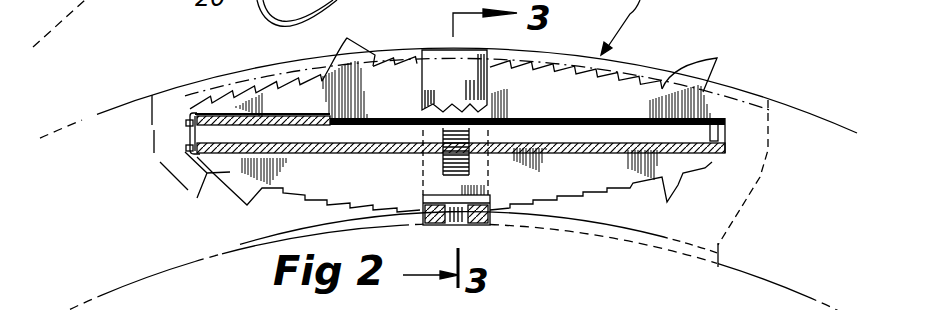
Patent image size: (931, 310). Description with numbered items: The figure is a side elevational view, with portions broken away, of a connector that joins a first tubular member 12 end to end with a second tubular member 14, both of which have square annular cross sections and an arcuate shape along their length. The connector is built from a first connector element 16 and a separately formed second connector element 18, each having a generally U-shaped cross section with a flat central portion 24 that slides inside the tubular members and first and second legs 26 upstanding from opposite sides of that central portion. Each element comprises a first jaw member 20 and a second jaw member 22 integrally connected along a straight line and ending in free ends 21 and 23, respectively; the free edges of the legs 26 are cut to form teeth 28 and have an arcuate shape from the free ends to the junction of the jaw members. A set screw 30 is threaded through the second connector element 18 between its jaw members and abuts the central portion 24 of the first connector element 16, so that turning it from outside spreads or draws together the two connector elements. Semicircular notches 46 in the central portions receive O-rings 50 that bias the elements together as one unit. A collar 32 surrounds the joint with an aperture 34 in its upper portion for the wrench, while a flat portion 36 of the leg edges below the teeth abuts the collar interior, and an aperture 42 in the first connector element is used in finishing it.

The first tubular member 12 is at (90, 118).
The second tubular member 14 is at (815, 123).
The first connector element 16 is at (649, 68).
The second connector element 18 is at (615, 205).
The first jaw member 20 is at (192, 112).
The free end 21 is at (187, 121).
The second jaw member 22 is at (504, 183).
The free end 23 is at (725, 114).
The flat central portion 24 is at (607, 130).
The legs 26 is at (267, 92).
The teeth 28 is at (348, 45).
The set screw 30 is at (437, 168).
The collar 32 is at (435, 40).
The aperture 34 is at (452, 226).
The portion 36 is at (477, 220).
The aperture 42 is at (307, 118).
The semicircular notches 46 is at (188, 142).
The O-rings 50 is at (260, 18).